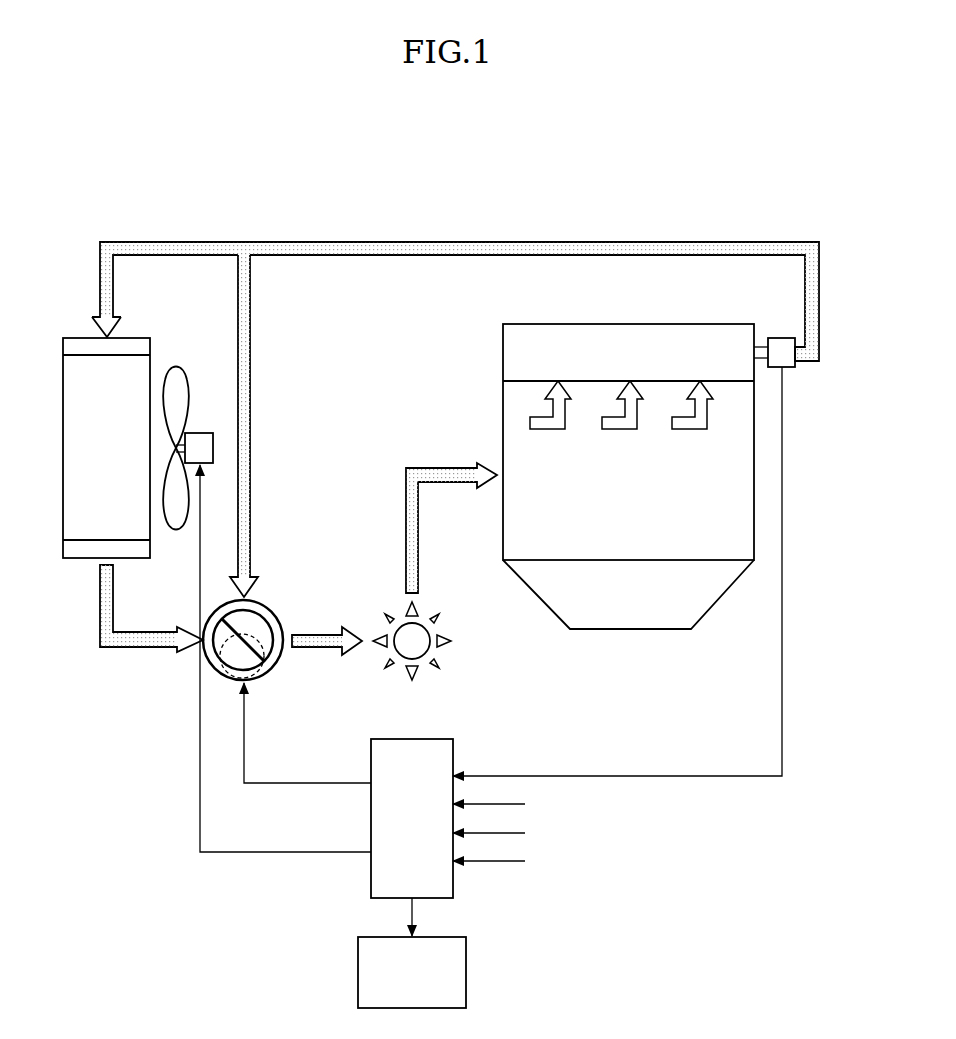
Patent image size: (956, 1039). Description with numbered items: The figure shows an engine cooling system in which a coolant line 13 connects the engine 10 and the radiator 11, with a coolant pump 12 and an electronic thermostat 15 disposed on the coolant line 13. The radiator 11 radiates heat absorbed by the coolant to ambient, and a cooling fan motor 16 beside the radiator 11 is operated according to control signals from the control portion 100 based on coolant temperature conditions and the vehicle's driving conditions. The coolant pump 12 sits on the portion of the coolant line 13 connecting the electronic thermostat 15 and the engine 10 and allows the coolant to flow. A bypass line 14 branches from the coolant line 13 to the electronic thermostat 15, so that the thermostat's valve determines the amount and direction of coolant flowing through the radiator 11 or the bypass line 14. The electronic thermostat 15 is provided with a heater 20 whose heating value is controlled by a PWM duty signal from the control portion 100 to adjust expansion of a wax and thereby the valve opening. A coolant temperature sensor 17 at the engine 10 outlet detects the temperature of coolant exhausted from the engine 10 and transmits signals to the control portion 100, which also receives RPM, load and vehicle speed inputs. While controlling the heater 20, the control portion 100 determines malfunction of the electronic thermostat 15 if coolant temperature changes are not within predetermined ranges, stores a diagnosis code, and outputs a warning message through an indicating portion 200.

The engine 10 is at (490, 395).
The radiator 11 is at (152, 535).
The coolant pump 12 is at (405, 628).
The coolant line 13 is at (447, 241).
The bypass line 14 is at (251, 414).
The electronic thermostat 15 is at (268, 612).
The cooling fan motor 16 is at (197, 432).
The coolant temperature sensor 17 is at (778, 337).
The heater 20 is at (262, 671).
The control portion 100 is at (425, 739).
The indicating portion 200 is at (468, 972).